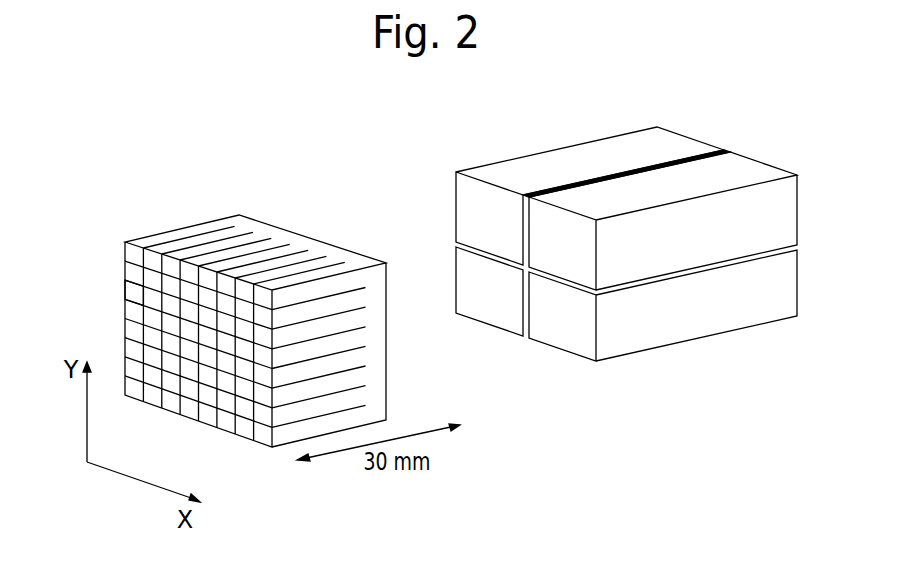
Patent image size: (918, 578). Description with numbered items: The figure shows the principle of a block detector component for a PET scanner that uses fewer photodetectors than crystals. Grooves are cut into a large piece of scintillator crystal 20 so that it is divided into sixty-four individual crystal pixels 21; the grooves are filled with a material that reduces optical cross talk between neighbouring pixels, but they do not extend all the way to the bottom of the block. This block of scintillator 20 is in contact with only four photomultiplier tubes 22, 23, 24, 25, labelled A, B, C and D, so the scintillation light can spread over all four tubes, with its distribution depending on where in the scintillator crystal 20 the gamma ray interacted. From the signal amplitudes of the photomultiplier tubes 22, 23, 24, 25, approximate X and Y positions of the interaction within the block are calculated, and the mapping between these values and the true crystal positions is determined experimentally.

The scintillator crystal 20 is at (222, 289).
The crystal pixel 21 is at (101, 287).
The photomultiplier tube 22 is at (468, 199).
The photomultiplier tube 23 is at (543, 208).
The photomultiplier tube 24 is at (493, 317).
The photomultiplier tube 25 is at (568, 343).